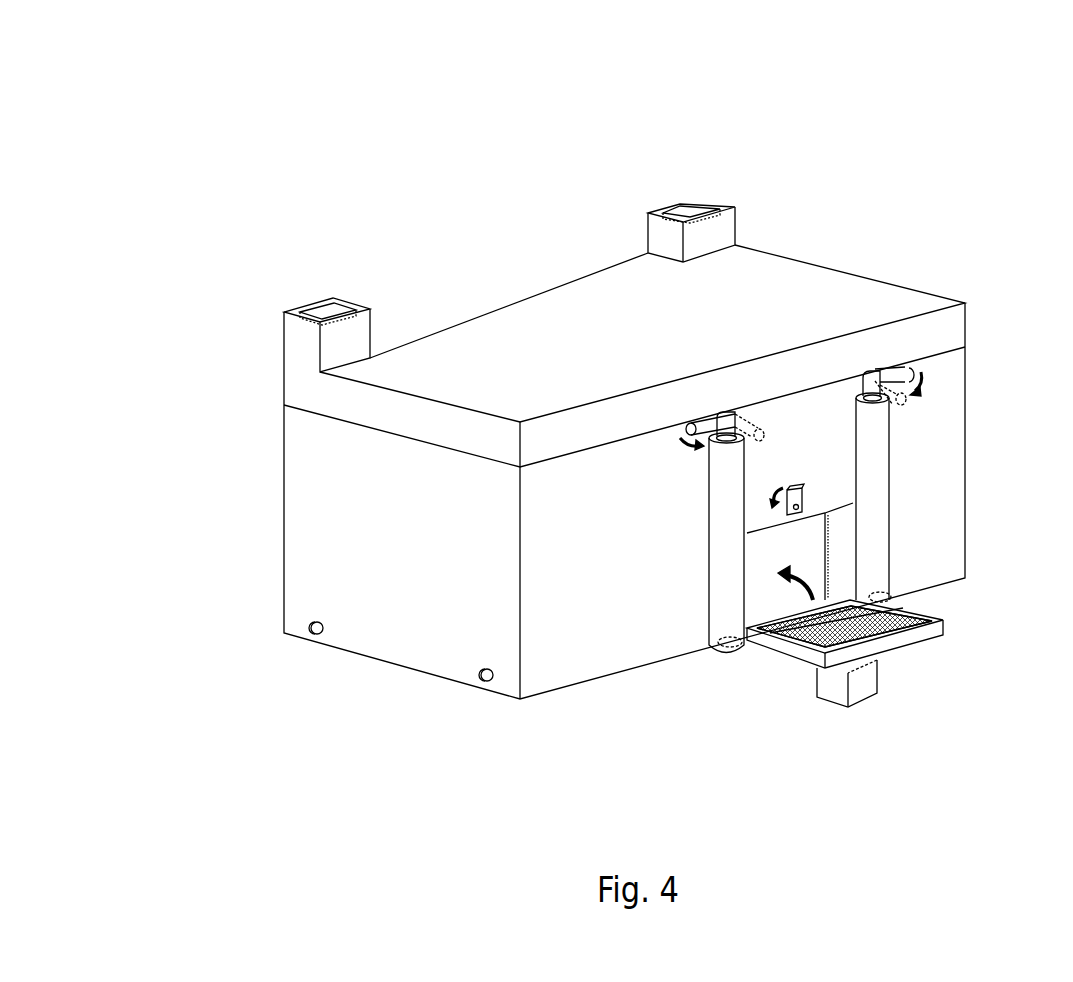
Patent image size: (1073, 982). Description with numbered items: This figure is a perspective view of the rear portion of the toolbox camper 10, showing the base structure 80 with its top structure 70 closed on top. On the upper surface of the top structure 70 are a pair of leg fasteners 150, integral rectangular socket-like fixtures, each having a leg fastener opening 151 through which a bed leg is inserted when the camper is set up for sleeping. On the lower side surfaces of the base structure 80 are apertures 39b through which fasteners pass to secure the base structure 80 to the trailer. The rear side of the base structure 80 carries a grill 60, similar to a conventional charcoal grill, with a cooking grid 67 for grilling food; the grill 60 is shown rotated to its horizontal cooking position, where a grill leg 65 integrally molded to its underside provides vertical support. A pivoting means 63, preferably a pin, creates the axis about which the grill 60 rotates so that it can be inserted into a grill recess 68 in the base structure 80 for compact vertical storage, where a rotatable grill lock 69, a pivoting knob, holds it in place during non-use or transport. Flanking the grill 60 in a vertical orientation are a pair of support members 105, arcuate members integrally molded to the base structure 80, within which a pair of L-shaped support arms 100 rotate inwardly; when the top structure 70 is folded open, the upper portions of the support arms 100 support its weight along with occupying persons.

The toolbox camper 10 is at (150, 174).
The apertures 39b is at (480, 674).
The grill 60 is at (837, 658).
The pivoting means 63 is at (736, 653).
The grill leg 65 is at (858, 690).
The cooking grid 67 is at (922, 617).
The grill recess 68 is at (753, 575).
The grill lock 69 is at (794, 488).
The top structure 70 is at (798, 280).
The base structure 80 is at (310, 507).
The support arms 100 is at (883, 373).
The support members 105 is at (878, 535).
The leg fasteners 150 is at (303, 332).
The leg fastener opening 151 is at (323, 308).